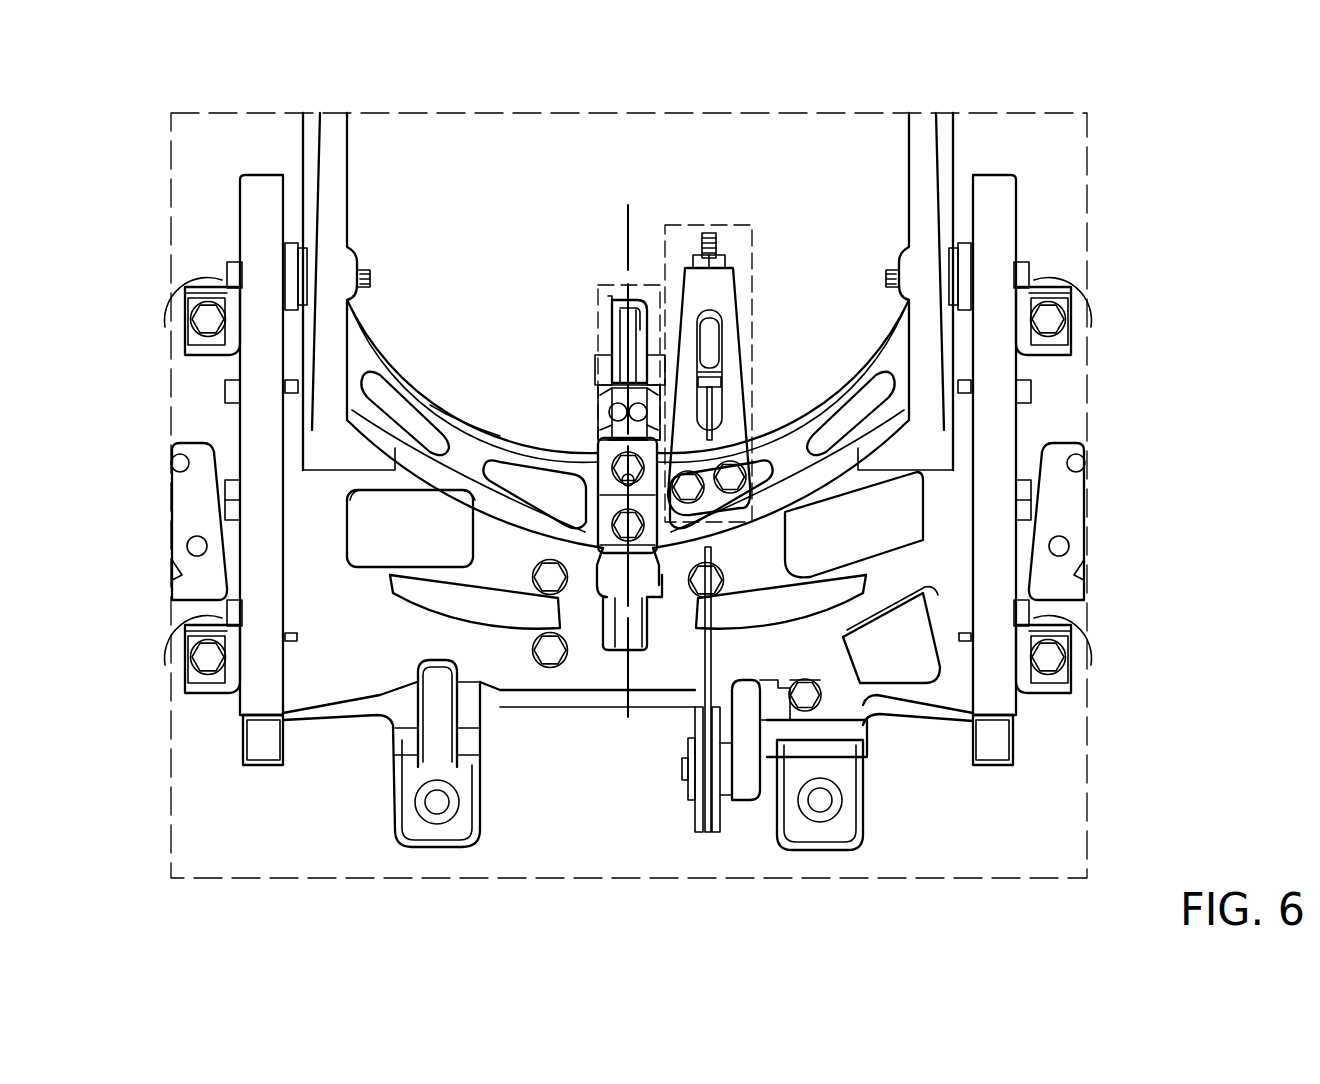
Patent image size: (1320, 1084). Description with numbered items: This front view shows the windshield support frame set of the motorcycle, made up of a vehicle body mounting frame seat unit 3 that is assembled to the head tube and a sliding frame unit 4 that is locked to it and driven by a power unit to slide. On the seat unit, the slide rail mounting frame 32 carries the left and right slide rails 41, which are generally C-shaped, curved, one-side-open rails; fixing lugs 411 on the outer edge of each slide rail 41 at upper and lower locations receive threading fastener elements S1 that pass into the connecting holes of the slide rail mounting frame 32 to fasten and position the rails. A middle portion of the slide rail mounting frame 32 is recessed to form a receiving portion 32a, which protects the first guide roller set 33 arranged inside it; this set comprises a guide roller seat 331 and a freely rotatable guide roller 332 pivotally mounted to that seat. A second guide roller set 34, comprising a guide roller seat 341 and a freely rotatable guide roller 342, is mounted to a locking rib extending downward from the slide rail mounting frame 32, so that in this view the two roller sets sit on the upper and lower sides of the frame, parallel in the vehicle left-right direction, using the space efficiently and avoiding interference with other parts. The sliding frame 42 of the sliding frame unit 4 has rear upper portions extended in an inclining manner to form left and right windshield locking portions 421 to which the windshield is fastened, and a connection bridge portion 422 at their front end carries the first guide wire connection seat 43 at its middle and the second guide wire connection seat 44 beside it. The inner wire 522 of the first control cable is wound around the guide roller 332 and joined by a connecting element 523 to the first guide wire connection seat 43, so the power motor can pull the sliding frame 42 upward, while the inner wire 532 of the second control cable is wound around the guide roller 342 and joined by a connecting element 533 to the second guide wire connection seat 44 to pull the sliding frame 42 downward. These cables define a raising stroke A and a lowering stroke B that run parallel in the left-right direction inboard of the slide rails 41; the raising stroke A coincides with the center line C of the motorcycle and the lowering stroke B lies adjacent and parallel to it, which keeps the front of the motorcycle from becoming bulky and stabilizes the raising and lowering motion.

The vehicle body mounting frame seat unit 3 is at (378, 785).
The sliding frame unit 4 is at (442, 235).
The slide rail mounting frame 32 is at (377, 668).
The receiving portion 32a is at (503, 437).
The first guide roller set 33 is at (583, 304).
The guide roller seat 331 is at (617, 295).
The guide roller 332 is at (618, 318).
The second guide roller set 34 is at (687, 803).
The guide roller seat 341 is at (752, 790).
The guide roller 342 is at (700, 765).
The slide rails 41 is at (260, 222).
The fixing lugs 411 is at (183, 293).
The sliding frame 42 is at (345, 238).
The windshield locking portions 421 is at (317, 133).
The connection bridge portion 422 is at (365, 360).
The first guide wire connection seat 43 is at (612, 450).
The second guide wire connection seat 44 is at (718, 288).
The inner wire 522 is at (623, 340).
The connecting element 523 is at (623, 413).
The inner wire 532 is at (707, 662).
The connecting element 533 is at (707, 360).
The threading fastener elements S1 is at (200, 322).
The raising stroke A is at (588, 272).
The lowering stroke B is at (733, 222).
The center line C is at (618, 222).